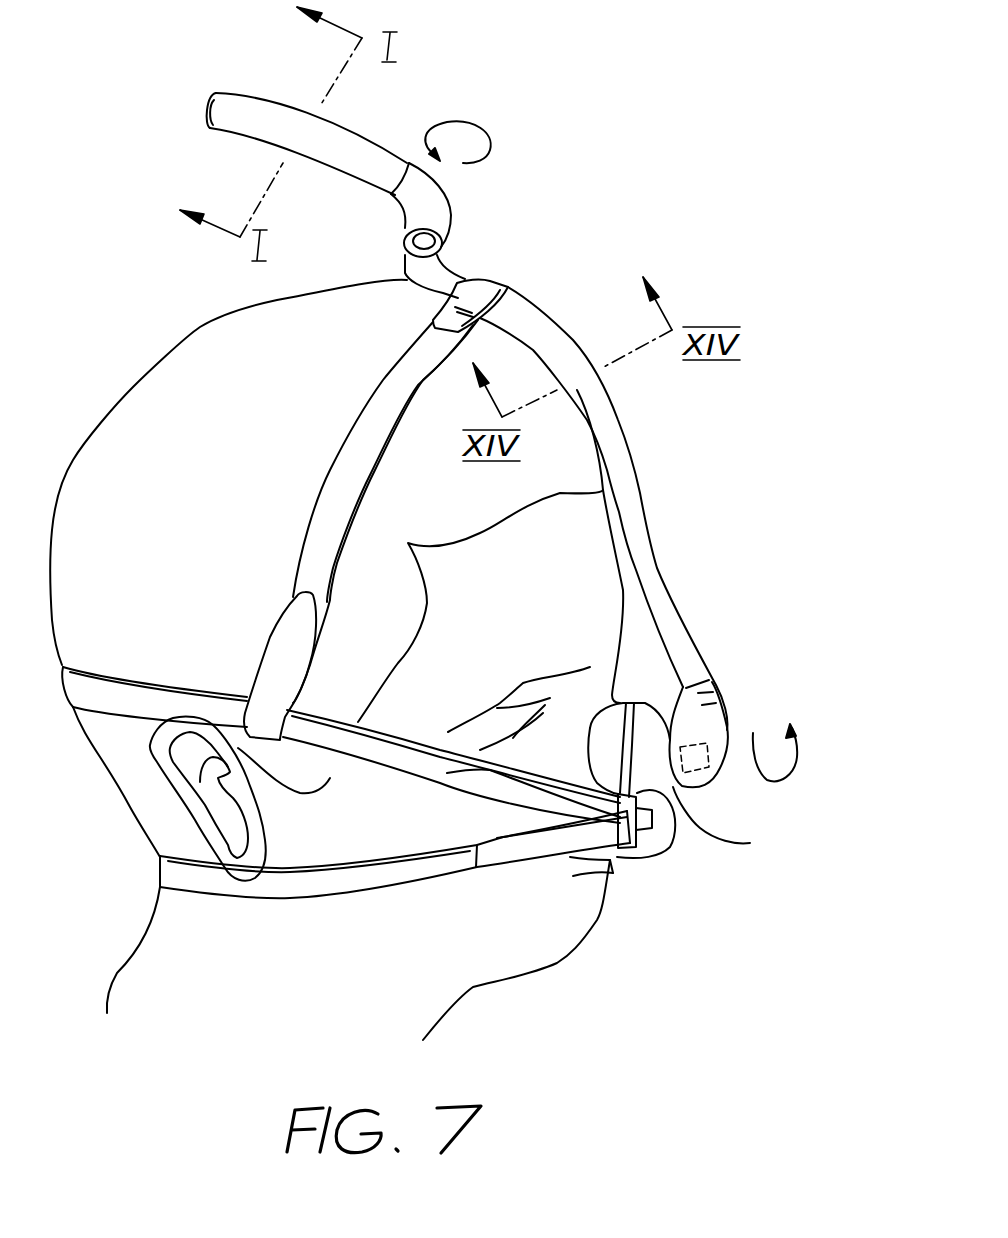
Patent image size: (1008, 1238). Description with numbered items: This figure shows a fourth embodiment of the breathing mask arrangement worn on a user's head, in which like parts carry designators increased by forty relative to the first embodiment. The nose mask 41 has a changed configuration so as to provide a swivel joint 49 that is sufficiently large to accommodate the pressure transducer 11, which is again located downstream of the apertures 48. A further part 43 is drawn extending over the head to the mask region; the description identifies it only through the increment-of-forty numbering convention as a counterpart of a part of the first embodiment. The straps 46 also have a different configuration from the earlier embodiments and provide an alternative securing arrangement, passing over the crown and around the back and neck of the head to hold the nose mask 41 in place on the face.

The pressure transducer 11 is at (717, 780).
The nose mask 41 is at (720, 727).
The gas delivery tube 43 is at (617, 447).
The straps 46 is at (377, 405).
The apertures 48 is at (717, 683).
The swivel joint 49 is at (667, 680).